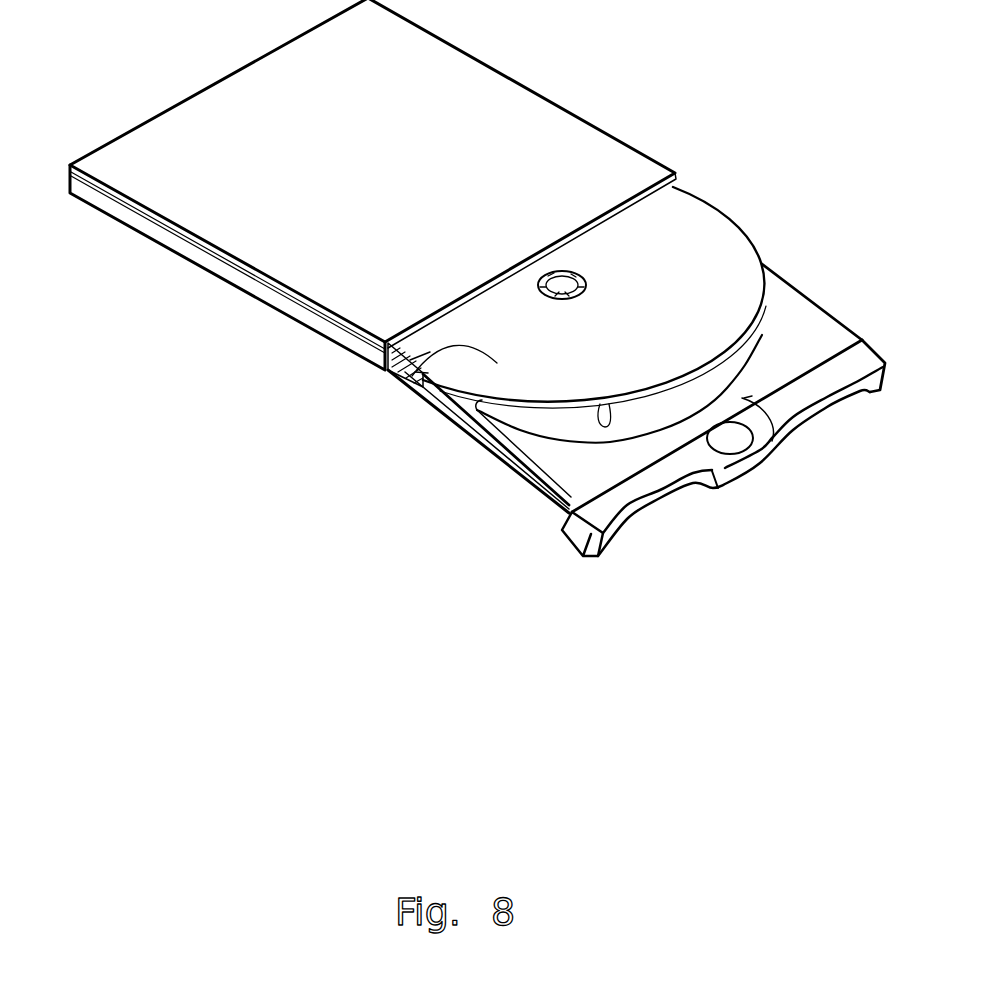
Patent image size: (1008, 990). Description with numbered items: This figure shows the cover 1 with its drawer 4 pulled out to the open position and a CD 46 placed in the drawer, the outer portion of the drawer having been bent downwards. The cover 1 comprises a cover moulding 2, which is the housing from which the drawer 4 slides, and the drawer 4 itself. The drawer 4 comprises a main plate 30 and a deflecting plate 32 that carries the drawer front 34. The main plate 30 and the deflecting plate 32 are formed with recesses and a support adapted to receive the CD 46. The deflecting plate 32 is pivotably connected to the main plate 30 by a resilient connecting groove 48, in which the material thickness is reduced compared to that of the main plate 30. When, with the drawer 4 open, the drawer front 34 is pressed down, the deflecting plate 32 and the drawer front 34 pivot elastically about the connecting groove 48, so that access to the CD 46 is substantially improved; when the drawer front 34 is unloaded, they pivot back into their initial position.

The cover 1 is at (469, 278).
The cover moulding 2 is at (173, 180).
The drawer 4 is at (553, 392).
The main plate 30 is at (416, 374).
The deflecting plate 32 is at (497, 457).
The drawer front 34 is at (767, 443).
The CD 46 is at (418, 372).
The connecting groove 48 is at (419, 373).